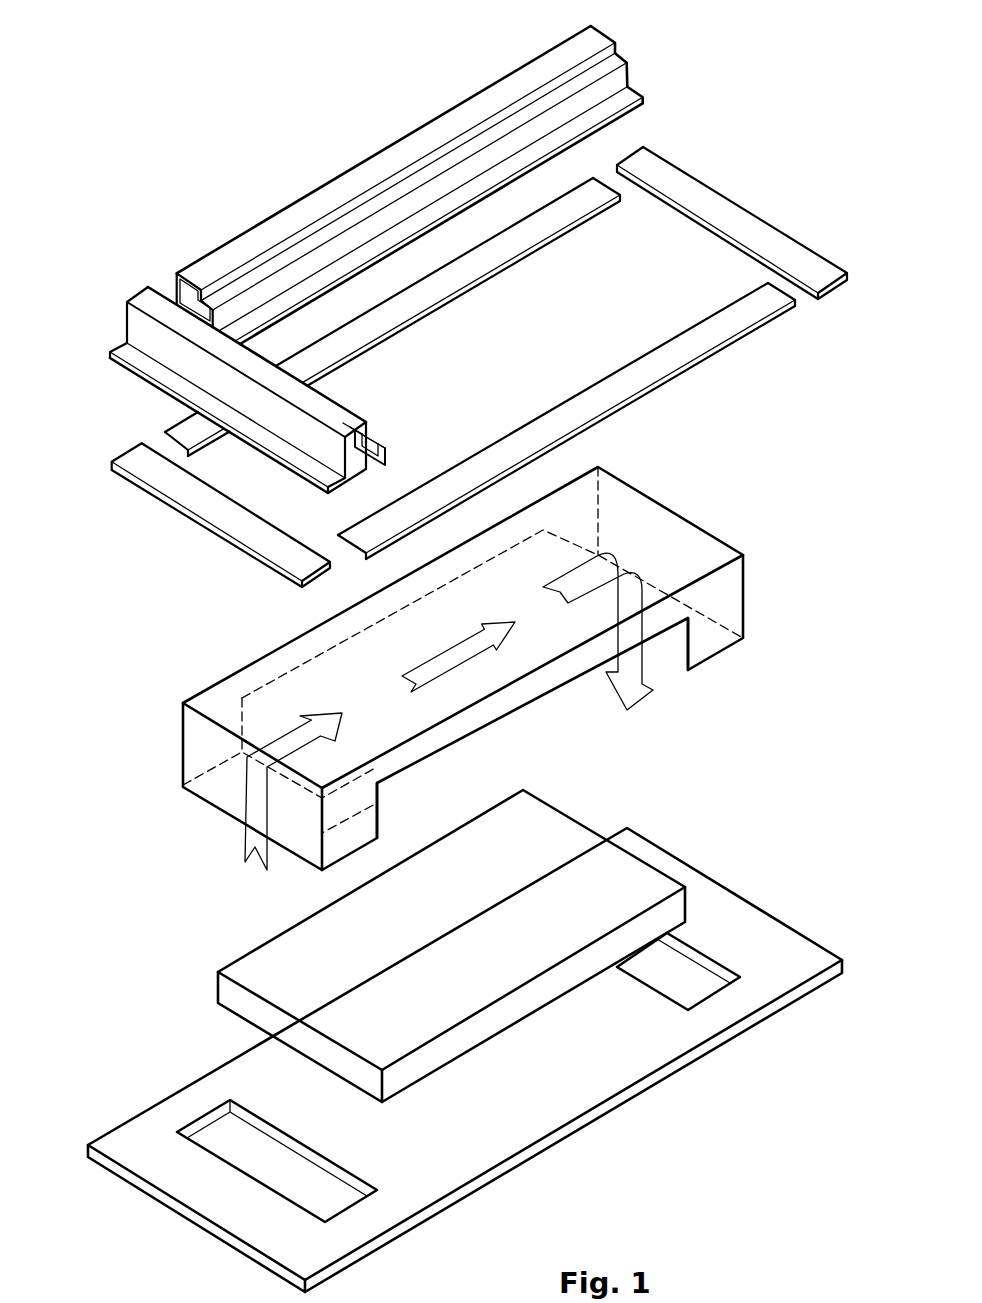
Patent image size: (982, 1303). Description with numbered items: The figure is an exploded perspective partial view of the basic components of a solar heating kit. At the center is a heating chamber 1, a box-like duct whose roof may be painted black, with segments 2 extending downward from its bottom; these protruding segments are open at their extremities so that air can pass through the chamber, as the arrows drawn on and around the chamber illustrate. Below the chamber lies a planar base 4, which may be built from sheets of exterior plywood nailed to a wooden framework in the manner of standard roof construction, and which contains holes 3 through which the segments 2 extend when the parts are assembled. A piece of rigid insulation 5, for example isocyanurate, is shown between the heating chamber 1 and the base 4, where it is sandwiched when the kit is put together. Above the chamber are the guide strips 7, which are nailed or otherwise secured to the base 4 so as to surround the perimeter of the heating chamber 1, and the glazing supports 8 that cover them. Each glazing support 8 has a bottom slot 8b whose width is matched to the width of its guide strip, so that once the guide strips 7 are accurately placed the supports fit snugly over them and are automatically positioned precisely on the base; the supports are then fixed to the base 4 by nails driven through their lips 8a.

The heating chamber 1 is at (242, 677).
The segments 2 is at (737, 597).
The holes 3 is at (320, 1199).
The base 4 is at (536, 1083).
The rigid insulation 5 is at (510, 923).
The guide strips 7 is at (200, 508).
The glazing supports 8 is at (393, 153).
The lips 8a is at (623, 98).
The bottom slot 8b is at (355, 463).